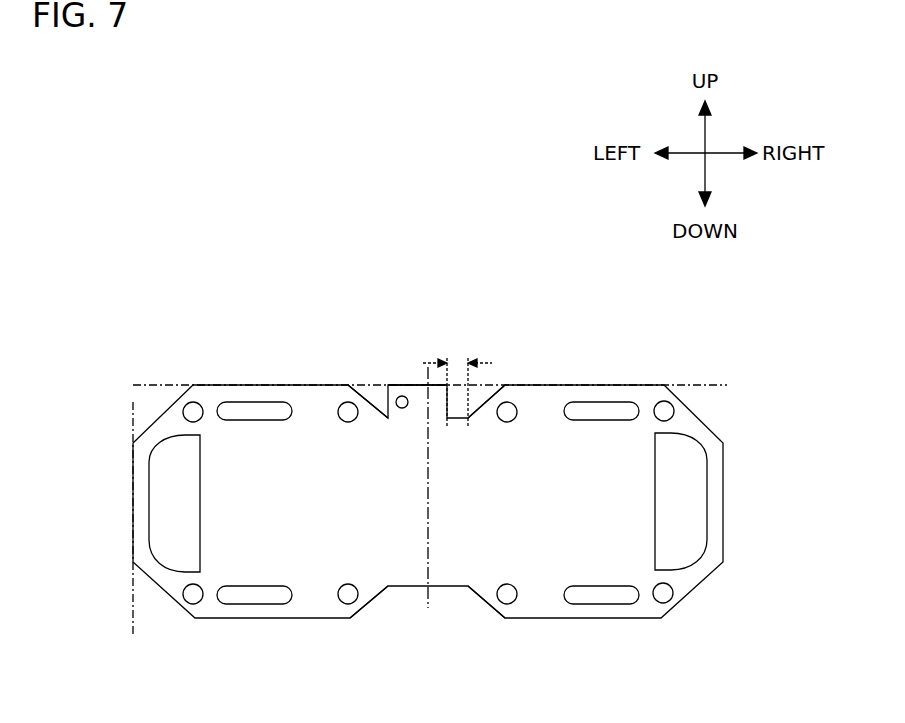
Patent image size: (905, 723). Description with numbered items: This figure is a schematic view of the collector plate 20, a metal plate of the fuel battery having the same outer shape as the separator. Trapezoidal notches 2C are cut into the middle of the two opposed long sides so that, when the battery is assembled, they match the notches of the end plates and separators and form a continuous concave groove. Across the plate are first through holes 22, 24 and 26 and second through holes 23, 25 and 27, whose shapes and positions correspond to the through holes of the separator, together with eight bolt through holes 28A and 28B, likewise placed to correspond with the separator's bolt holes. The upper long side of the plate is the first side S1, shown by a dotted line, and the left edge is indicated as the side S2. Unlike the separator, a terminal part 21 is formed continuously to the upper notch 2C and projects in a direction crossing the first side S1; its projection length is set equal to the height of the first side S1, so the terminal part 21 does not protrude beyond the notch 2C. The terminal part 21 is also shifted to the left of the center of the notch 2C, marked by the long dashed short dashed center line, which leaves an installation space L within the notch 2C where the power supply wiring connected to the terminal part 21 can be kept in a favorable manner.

The collector plate 20 is at (441, 310).
The terminal part 21 is at (418, 391).
The first through hole 22 is at (178, 548).
The second through hole 23 is at (687, 543).
The first through hole 24 is at (255, 596).
The second through hole 25 is at (600, 408).
The first through hole 26 is at (250, 408).
The second through hole 27 is at (592, 596).
The bolt through hole 28A is at (192, 404).
The bolt through hole 28B is at (347, 404).
The trapezoidal notch 2C is at (366, 398).
The first side S1 is at (135, 384).
The second side S2 is at (133, 608).
The installation space L is at (457, 381).